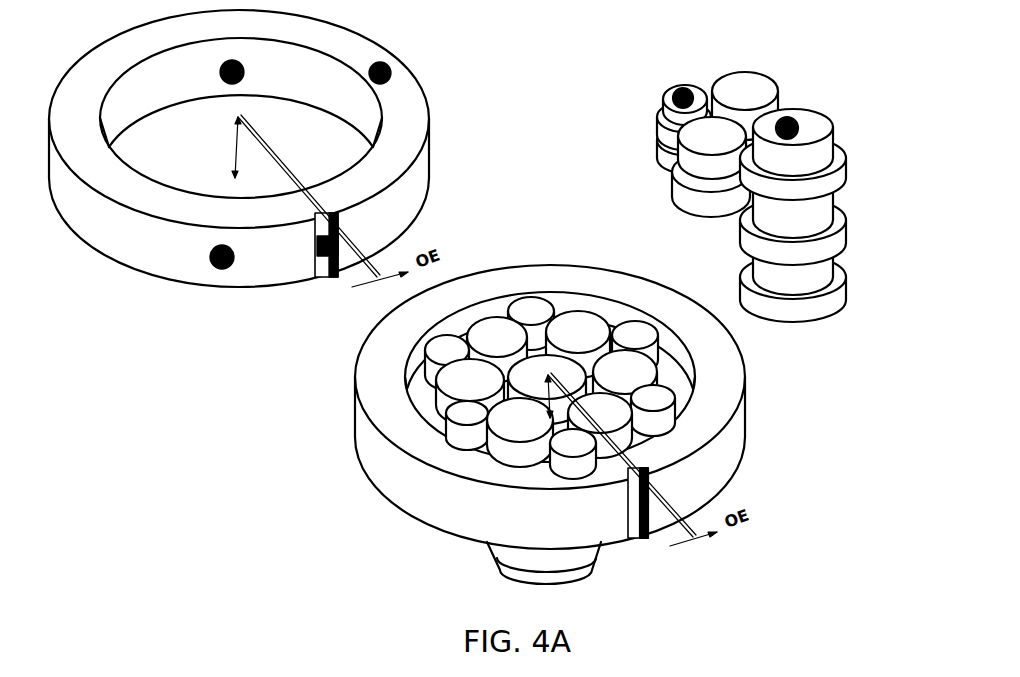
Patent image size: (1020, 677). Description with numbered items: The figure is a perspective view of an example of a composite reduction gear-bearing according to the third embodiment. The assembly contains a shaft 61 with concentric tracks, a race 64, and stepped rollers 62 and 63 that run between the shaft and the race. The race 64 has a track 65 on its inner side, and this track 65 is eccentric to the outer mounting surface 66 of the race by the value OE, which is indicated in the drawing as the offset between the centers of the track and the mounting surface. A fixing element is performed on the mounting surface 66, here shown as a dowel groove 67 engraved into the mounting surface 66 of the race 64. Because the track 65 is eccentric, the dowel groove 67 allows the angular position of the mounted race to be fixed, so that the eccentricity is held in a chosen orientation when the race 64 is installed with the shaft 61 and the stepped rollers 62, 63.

The shaft 61 is at (793, 122).
The stepped roller 62 is at (755, 86).
The stepped roller 63 is at (690, 90).
The race 64 is at (391, 72).
The track 65 is at (244, 72).
The mounting surface 66 is at (212, 265).
The dowel groove 67 is at (317, 252).